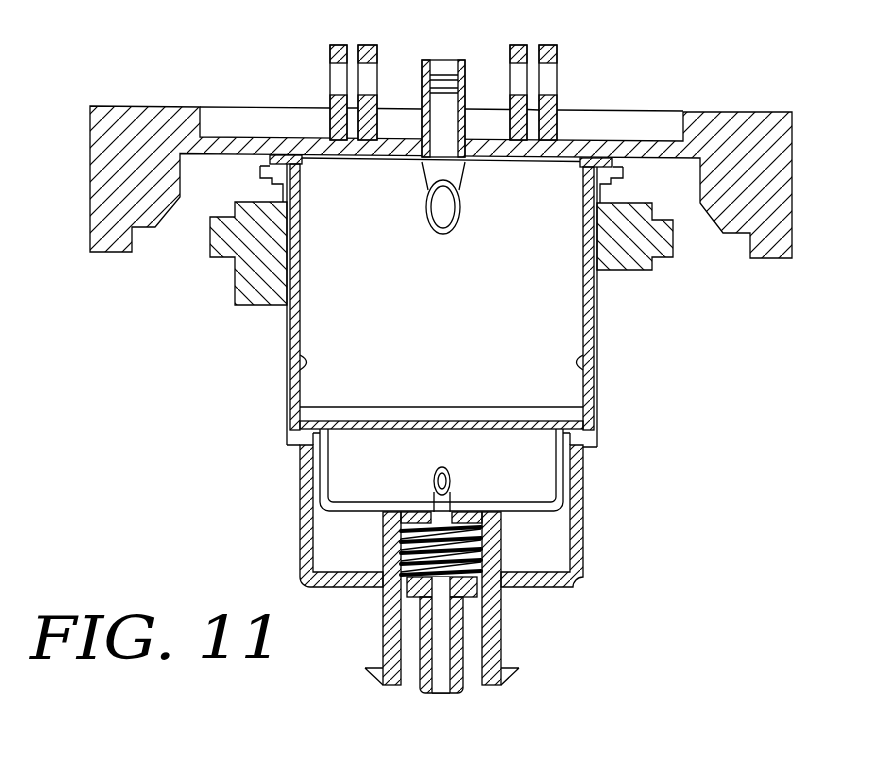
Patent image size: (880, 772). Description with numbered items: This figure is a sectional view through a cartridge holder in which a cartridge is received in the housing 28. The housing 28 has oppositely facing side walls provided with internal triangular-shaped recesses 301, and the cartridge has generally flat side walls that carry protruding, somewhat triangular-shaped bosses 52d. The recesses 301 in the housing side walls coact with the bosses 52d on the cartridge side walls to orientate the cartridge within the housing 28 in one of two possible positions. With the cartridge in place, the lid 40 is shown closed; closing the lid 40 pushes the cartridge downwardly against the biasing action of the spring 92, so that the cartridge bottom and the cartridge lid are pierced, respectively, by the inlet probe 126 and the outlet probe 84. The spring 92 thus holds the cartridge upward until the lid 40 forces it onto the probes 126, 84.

The lid 40 is at (593, 156).
The inlet probe 126 is at (458, 190).
The bosses 52d is at (300, 310).
The recesses 301 is at (287, 370).
The housing 28 is at (583, 543).
The outlet probe 84 is at (452, 483).
The spring 92 is at (487, 558).